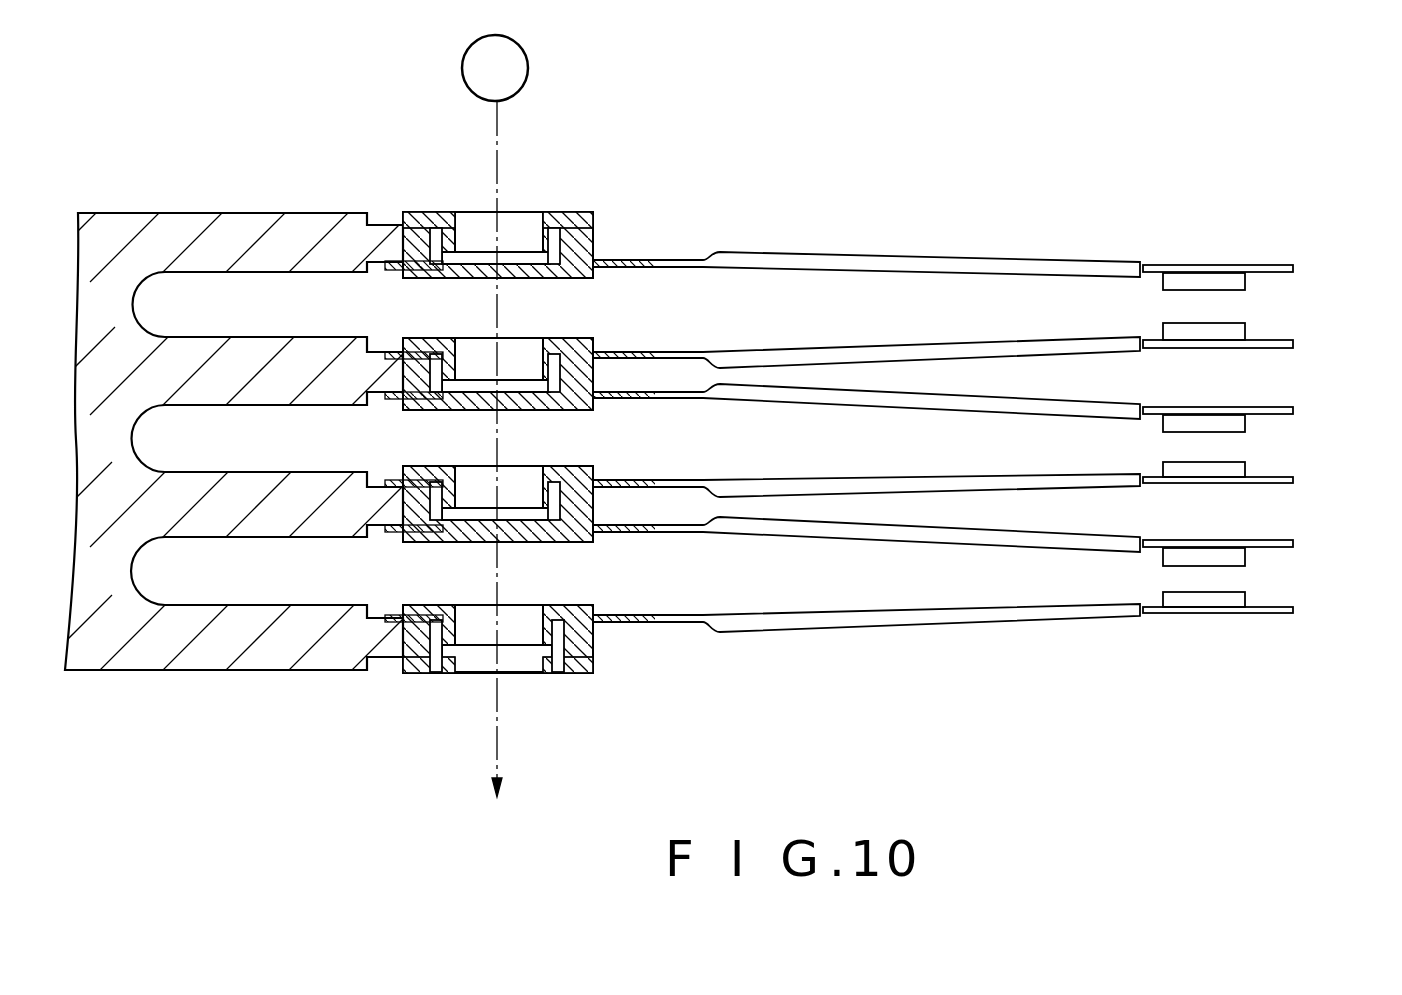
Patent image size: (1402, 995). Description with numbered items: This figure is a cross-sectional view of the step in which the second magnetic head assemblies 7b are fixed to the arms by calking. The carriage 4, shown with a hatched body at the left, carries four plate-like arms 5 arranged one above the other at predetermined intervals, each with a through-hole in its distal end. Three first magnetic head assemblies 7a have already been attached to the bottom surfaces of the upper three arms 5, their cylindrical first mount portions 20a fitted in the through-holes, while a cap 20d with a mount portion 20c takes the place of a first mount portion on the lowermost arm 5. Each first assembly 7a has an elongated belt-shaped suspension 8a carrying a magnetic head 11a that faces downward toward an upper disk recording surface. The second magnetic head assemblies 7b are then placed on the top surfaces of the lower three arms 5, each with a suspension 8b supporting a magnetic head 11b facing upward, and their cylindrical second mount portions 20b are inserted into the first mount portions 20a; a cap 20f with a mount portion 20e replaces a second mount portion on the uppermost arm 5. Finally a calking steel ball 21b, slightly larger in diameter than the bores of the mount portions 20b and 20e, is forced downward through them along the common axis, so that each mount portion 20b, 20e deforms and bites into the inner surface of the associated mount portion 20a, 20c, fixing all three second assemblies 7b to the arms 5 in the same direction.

The carriage 4 is at (143, 655).
The arm 5 is at (379, 234).
The first magnetic head assembly 7a is at (1097, 256).
The second magnetic head assembly 7b is at (1308, 347).
The suspension 8a is at (689, 261).
The suspension 8b is at (690, 352).
The magnetic head 11a is at (1215, 282).
The magnetic head 11b is at (1247, 330).
The first mount portion 20a is at (442, 266).
The second mount portion 20b is at (543, 266).
The mount portion 20c is at (466, 672).
The cap 20d is at (580, 674).
The mount portion 20e is at (528, 247).
The cap 20f is at (578, 240).
The calking steel ball 21b is at (529, 74).